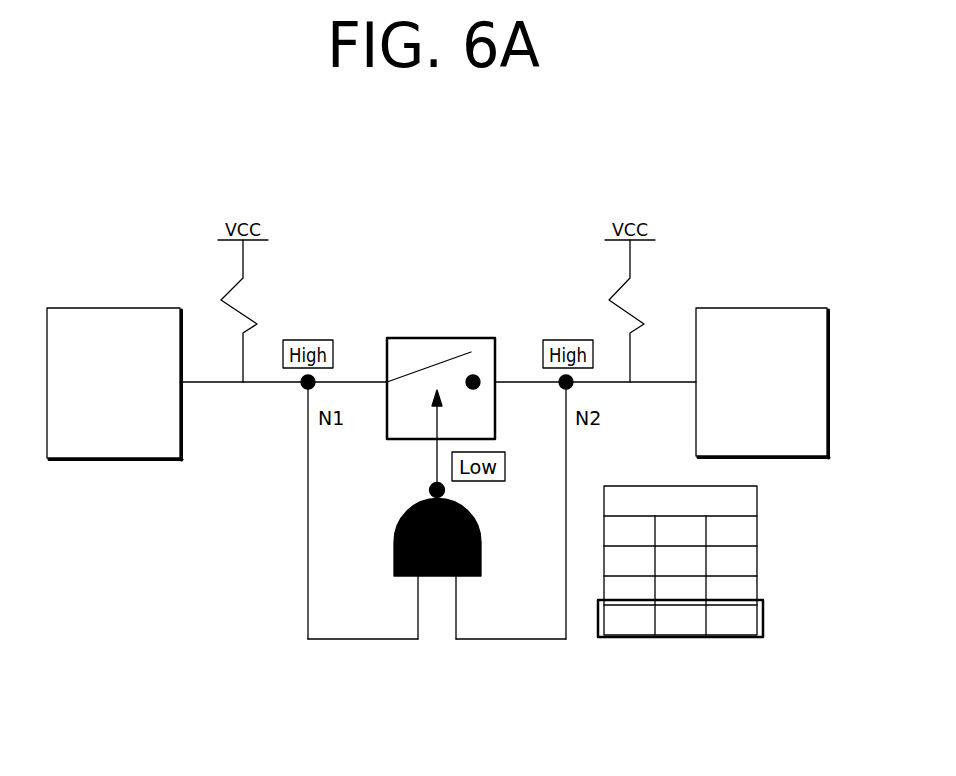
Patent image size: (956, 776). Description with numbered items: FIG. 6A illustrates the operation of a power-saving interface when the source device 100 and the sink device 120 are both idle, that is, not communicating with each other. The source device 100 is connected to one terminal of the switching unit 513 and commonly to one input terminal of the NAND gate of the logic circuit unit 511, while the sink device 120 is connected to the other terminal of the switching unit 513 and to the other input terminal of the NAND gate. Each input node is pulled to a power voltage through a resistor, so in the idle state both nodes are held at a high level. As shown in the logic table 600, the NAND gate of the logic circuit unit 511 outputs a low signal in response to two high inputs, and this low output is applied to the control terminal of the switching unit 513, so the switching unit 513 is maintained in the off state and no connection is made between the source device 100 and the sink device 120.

The source device 100 is at (113, 308).
The sink device 120 is at (762, 308).
The switching unit 513 is at (438, 338).
The logic circuit unit 511 is at (423, 672).
The logic table 600 is at (782, 572).